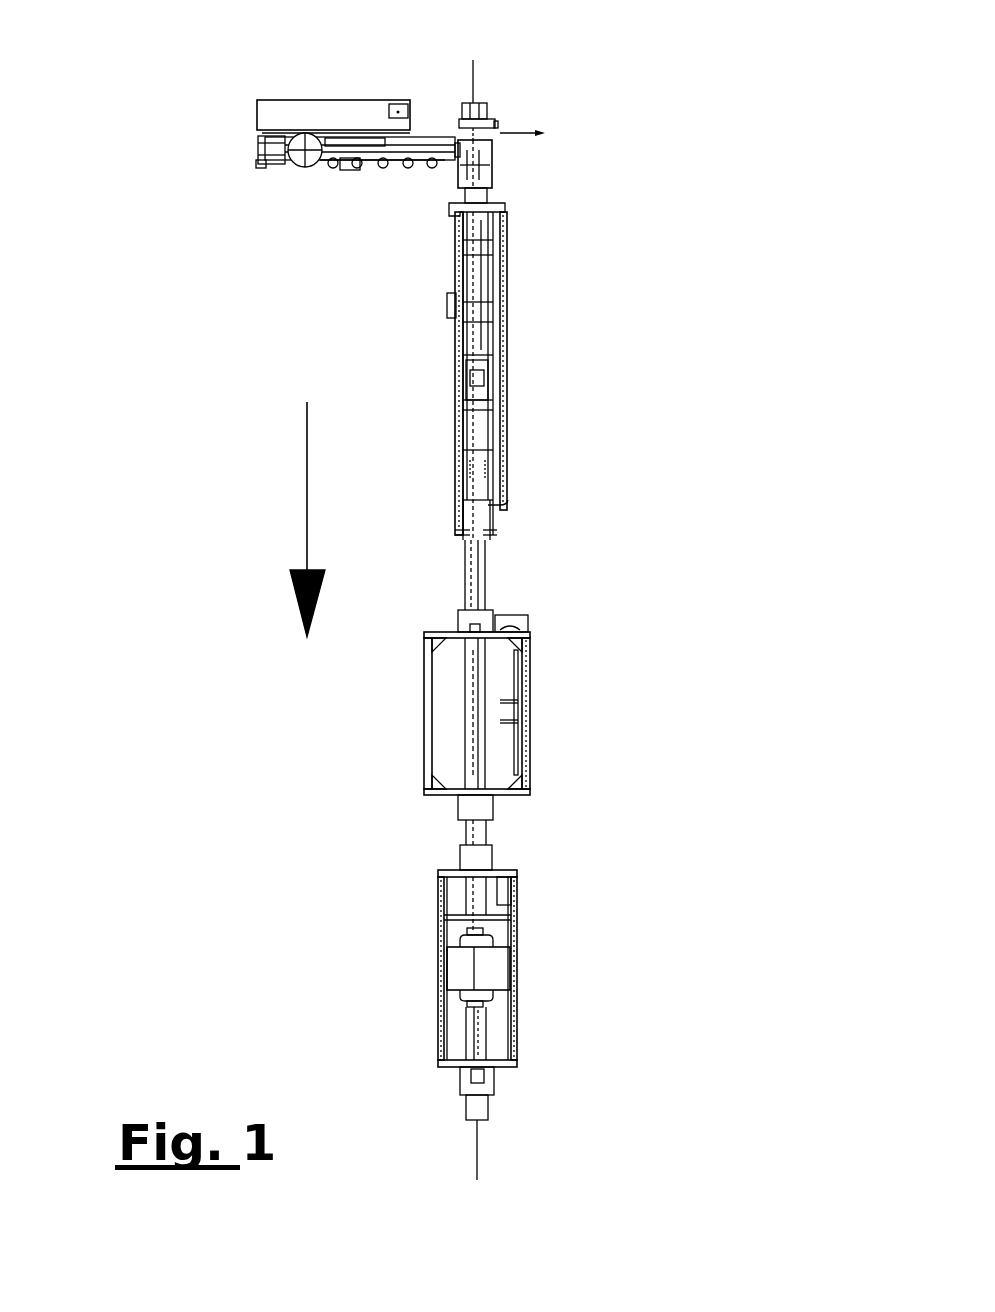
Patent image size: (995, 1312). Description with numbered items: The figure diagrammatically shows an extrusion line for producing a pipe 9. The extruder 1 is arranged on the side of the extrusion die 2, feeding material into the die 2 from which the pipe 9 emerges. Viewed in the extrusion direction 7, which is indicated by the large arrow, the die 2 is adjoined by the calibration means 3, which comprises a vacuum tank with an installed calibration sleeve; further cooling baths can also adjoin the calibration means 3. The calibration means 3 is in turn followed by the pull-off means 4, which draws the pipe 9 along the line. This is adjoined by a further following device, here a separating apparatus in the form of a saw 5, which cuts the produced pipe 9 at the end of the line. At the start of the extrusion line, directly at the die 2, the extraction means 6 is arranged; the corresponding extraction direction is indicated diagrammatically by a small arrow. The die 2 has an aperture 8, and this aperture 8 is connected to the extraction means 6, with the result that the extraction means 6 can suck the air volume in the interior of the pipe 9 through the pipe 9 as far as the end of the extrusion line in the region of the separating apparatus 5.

The extruder 1 is at (314, 118).
The extrusion die 2 is at (488, 157).
The calibration means 3 is at (480, 332).
The pull-off means 4 is at (500, 754).
The saw 5 is at (495, 970).
The extraction means 6 is at (475, 100).
The extrusion direction 7 is at (305, 500).
The aperture 8 is at (478, 166).
The pipe 9 is at (483, 565).